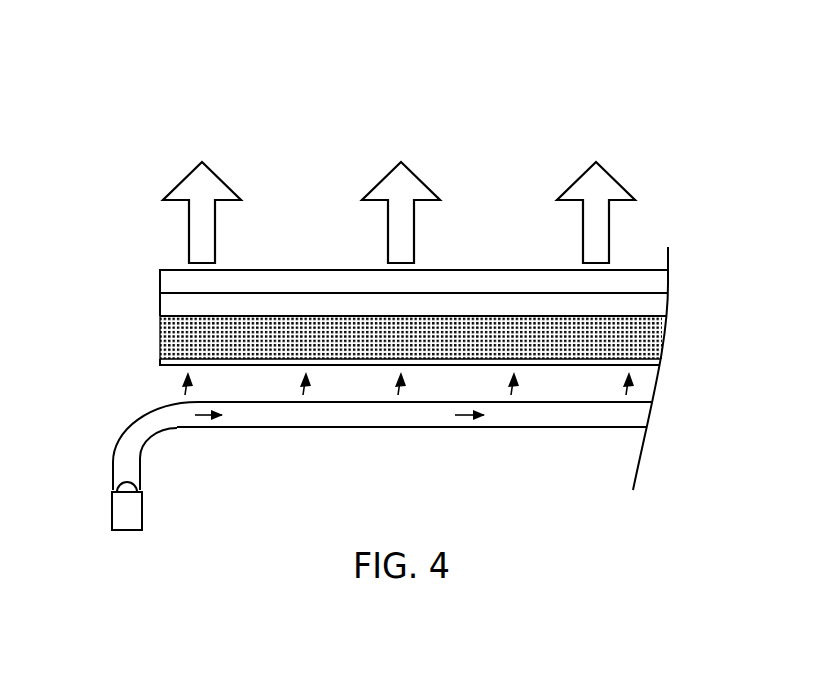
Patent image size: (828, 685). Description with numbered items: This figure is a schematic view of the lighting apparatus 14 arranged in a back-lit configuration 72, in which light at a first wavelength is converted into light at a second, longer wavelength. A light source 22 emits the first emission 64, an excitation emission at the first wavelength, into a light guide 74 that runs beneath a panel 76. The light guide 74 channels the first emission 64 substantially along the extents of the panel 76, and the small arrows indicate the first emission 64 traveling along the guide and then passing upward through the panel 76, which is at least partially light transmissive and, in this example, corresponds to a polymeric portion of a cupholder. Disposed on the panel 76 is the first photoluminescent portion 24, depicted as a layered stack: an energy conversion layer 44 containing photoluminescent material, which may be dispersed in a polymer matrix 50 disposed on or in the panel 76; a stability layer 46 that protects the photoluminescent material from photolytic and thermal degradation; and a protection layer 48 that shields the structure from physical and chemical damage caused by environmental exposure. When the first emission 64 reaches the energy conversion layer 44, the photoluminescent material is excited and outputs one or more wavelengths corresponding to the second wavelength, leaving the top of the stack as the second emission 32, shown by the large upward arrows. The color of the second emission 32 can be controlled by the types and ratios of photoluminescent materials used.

The back-lit configuration 72 is at (355, 283).
The lighting apparatus 14 is at (603, 73).
The first photoluminescent portion 24 is at (113, 327).
The protection layer 48 is at (167, 282).
The stability layer 46 is at (170, 304).
The energy conversion layer 44 is at (335, 356).
The polymer matrix 50 is at (160, 348).
The panel 76 is at (180, 363).
The light guide 74 is at (367, 420).
The first emission 64 is at (192, 393).
The second emission 32 is at (212, 229).
The light source 22 is at (133, 515).